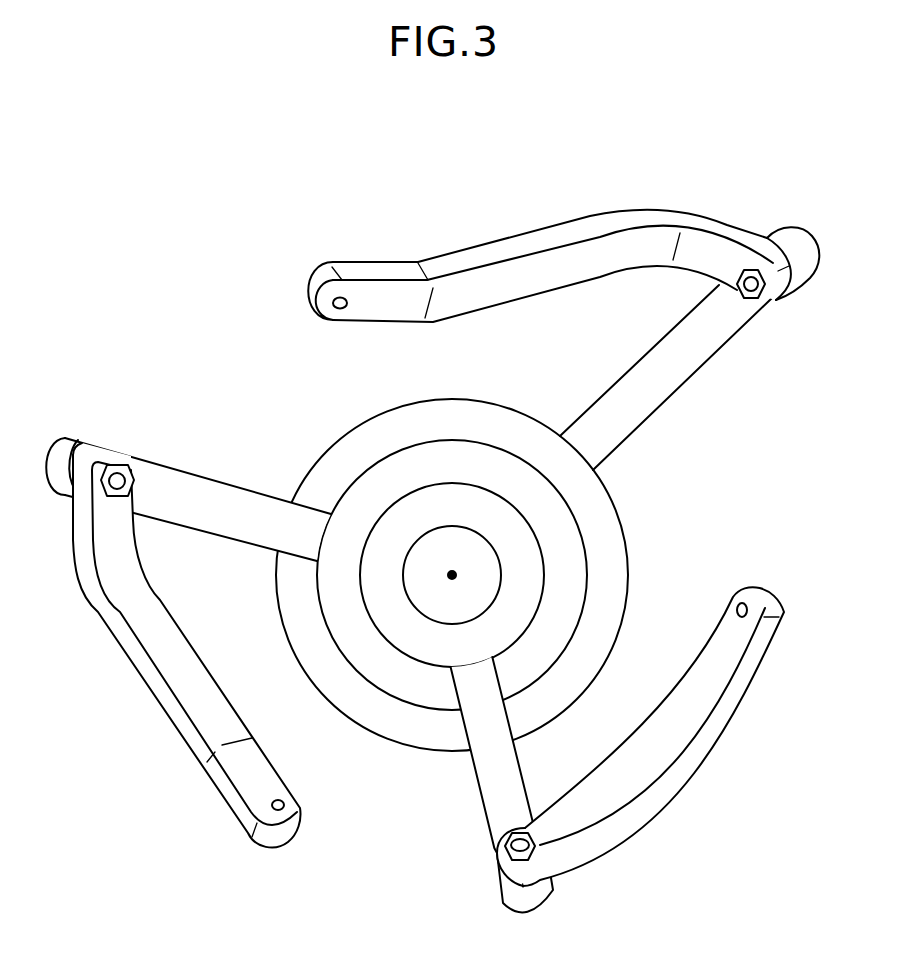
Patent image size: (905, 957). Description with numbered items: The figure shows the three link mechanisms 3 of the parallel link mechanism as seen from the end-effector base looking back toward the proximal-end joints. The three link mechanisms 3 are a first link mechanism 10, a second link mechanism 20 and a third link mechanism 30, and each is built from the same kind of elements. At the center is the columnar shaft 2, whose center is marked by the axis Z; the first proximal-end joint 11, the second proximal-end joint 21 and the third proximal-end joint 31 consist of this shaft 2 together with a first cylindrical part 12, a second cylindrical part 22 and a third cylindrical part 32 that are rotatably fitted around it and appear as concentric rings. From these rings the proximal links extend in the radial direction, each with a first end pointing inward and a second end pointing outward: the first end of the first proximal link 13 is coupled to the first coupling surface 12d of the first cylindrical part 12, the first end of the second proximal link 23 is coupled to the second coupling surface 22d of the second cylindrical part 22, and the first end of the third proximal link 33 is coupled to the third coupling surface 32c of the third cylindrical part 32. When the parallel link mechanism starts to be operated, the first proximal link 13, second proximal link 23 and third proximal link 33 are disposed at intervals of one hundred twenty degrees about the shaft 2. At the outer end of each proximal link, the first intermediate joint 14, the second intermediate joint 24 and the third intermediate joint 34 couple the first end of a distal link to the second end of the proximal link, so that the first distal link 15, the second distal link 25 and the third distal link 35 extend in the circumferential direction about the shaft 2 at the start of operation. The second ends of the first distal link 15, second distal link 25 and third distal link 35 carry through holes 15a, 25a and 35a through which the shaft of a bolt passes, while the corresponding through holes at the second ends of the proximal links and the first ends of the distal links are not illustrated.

The shaft 2 is at (448, 554).
The central axis Z is at (450, 575).
The link mechanisms 3 is at (435, 530).
The first link mechanism 10 is at (559, 656).
The first proximal-end joint 11 is at (490, 533).
The first cylindrical part 12 is at (490, 533).
The first coupling surface 12d is at (547, 567).
The first proximal link 13 is at (500, 787).
The first intermediate joint 14 is at (538, 848).
The first distal link 15 is at (672, 736).
The through hole 15a is at (748, 619).
The second link mechanism 20 is at (305, 639).
The second proximal-end joint 21 is at (400, 538).
The second cylindrical part 22 is at (400, 538).
The second coupling surface 22d is at (318, 609).
The second proximal link 23 is at (183, 488).
The second intermediate joint 24 is at (123, 463).
The second distal link 25 is at (173, 677).
The through hole 25a is at (282, 800).
The third link mechanism 30 is at (512, 449).
The third proximal-end joint 31 is at (452, 550).
The third cylindrical part 32 is at (452, 550).
The third coupling surface 32c is at (519, 400).
The third proximal link 33 is at (663, 393).
The third intermediate joint 34 is at (750, 300).
The third distal link 35 is at (512, 239).
The through hole 35a is at (327, 306).